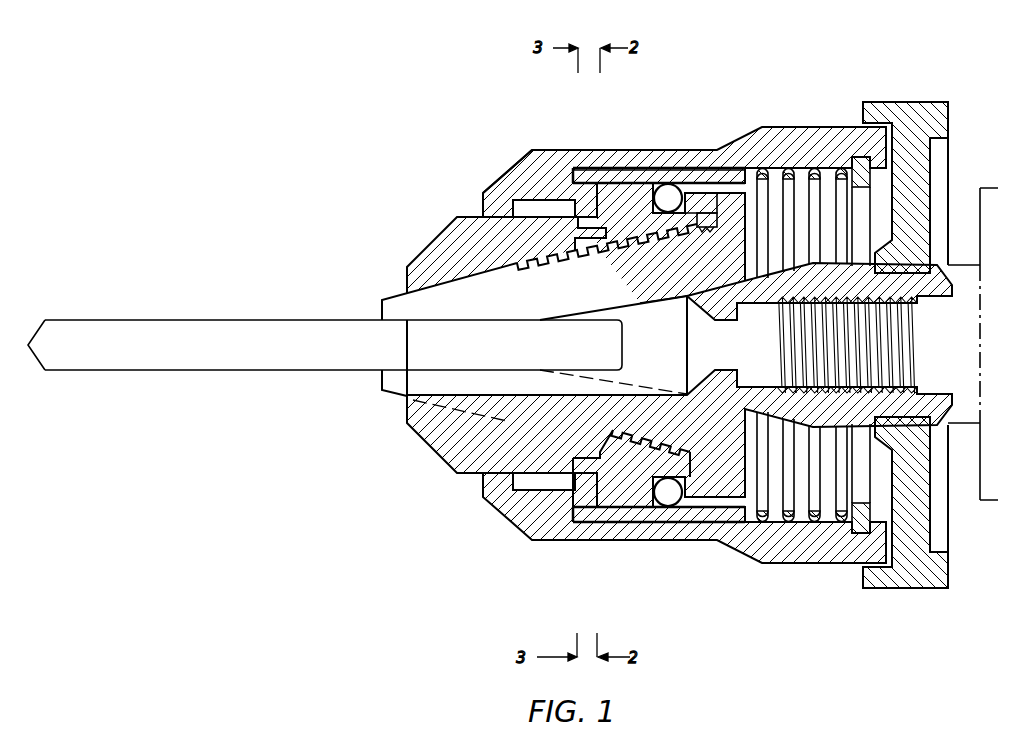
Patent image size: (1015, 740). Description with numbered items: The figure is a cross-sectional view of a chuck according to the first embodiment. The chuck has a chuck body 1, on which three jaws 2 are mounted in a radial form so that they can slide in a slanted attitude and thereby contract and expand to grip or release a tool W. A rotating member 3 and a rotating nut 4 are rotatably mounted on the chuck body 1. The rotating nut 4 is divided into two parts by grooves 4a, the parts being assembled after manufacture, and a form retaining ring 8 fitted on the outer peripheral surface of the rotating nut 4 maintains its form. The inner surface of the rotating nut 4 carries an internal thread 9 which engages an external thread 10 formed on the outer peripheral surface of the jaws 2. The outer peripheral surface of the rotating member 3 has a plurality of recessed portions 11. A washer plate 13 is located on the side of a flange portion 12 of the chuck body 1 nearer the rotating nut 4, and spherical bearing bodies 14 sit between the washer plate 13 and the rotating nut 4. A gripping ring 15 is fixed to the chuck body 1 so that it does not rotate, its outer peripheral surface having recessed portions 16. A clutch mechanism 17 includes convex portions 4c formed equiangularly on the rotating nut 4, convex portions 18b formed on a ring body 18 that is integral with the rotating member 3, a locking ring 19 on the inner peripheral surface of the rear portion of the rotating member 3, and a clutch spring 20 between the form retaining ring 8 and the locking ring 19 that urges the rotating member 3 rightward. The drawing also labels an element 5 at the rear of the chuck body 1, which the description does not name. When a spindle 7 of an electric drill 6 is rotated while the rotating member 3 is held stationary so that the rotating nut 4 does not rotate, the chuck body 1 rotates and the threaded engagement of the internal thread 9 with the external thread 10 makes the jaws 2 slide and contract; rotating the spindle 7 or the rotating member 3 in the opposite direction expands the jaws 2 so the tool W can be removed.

The chuck body 1 is at (405, 266).
The jaws 2 is at (381, 303).
The rotating member 3 is at (507, 512).
The rotating nut 4 is at (614, 182).
The grooves 4a is at (575, 236).
The convex portions 4c is at (599, 182).
The threaded bore 5 is at (847, 298).
The electric drill 6 is at (982, 500).
The spindle 7 is at (965, 424).
The form retaining ring 8 is at (760, 180).
The internal thread 9 is at (676, 237).
The external thread 10 is at (527, 275).
The recessed portions 11 is at (549, 151).
The flange portion 12 is at (740, 275).
The washer plate 13 is at (714, 214).
The spherical bearing bodies 14 is at (672, 194).
The gripping ring 15 is at (946, 113).
The recessed portions 16 is at (865, 588).
The clutch mechanism 17 is at (524, 173).
The ring body 18 is at (515, 200).
The convex portions 18b is at (587, 188).
The locking ring 19 is at (853, 530).
The clutch spring 20 is at (790, 522).
The tool W is at (128, 371).